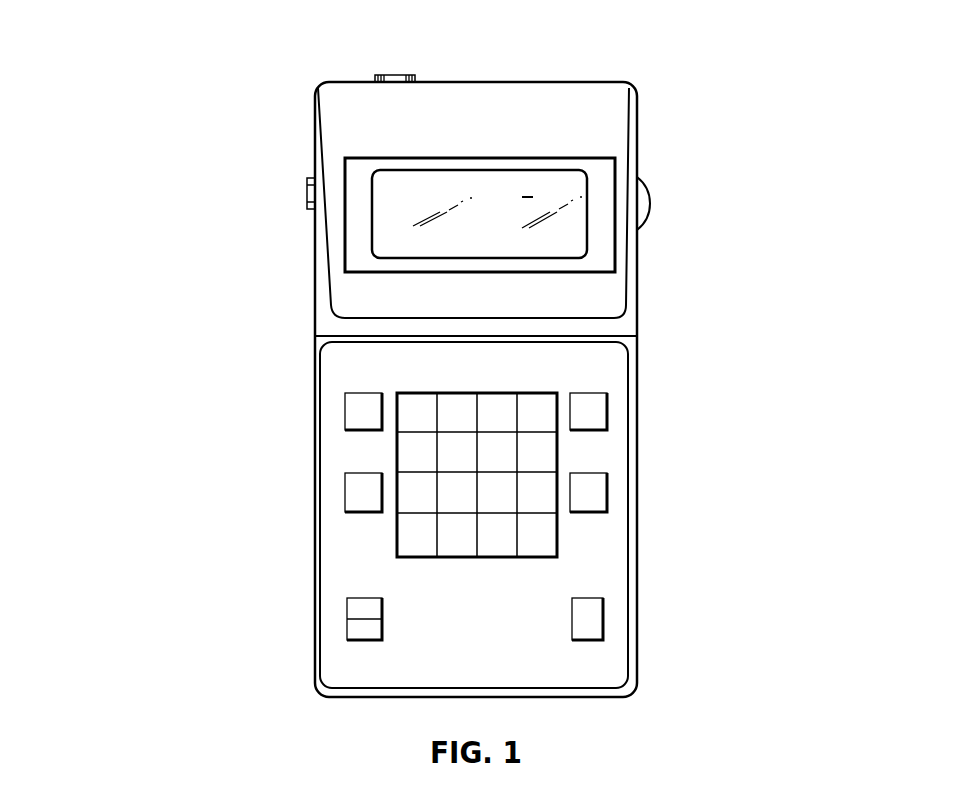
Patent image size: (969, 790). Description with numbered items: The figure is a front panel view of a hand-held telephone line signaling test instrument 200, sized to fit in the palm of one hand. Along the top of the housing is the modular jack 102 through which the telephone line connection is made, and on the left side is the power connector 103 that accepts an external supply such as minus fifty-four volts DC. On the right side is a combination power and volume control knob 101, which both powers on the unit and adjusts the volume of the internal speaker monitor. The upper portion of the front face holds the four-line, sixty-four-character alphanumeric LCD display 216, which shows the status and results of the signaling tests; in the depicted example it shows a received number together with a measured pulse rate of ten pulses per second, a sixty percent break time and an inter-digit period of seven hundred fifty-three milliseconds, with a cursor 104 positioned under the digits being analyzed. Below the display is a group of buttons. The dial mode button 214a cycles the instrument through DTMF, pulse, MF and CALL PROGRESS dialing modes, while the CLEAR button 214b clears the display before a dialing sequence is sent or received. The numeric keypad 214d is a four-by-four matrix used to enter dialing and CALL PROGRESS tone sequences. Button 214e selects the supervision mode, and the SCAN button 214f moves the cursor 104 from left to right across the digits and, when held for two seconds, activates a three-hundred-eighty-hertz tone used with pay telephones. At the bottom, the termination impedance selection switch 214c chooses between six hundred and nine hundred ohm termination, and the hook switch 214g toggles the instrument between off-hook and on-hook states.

The hand-held telephone line signaling test instrument 200 is at (550, 62).
The modular jack 102 is at (397, 72).
The LCD display 216 is at (372, 155).
The power connector 103 is at (307, 187).
The power and volume control knob 101 is at (642, 182).
The cursor 104 is at (527, 198).
The dial mode button 214a is at (348, 388).
The CLEAR button 214b is at (345, 490).
The termination impedance selection switch 214c is at (343, 609).
The numeric keypad 214d is at (537, 393).
The supervision mode button 214e is at (610, 398).
The SCAN button 214f is at (610, 475).
The hook status switch 214g is at (610, 607).